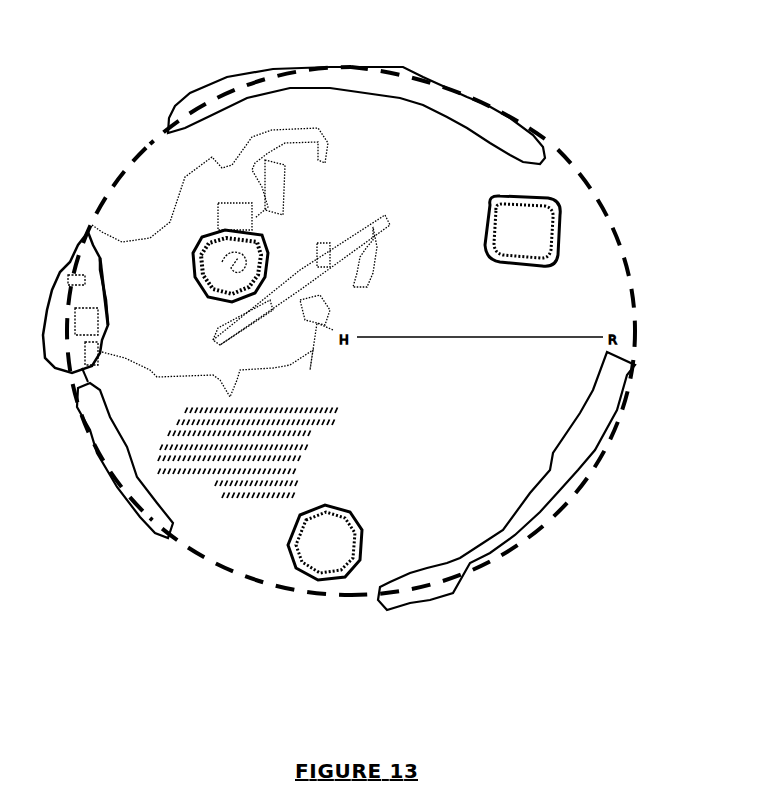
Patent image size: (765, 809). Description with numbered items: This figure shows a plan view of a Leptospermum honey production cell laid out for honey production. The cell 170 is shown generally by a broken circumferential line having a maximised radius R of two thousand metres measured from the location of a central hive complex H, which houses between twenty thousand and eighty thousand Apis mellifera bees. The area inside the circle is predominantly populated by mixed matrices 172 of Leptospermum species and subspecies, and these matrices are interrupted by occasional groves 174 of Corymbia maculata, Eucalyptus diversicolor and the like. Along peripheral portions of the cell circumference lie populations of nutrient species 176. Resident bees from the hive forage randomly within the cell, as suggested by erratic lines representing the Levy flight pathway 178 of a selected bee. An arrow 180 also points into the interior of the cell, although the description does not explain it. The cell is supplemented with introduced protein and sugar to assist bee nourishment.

The cell 170 is at (133, 152).
The mixed matrices 172 is at (257, 492).
The groves 174 is at (571, 212).
The populations of nutrient species 176 is at (546, 494).
The Levy flight pathway 178 is at (100, 223).
The central region 180 is at (405, 427).